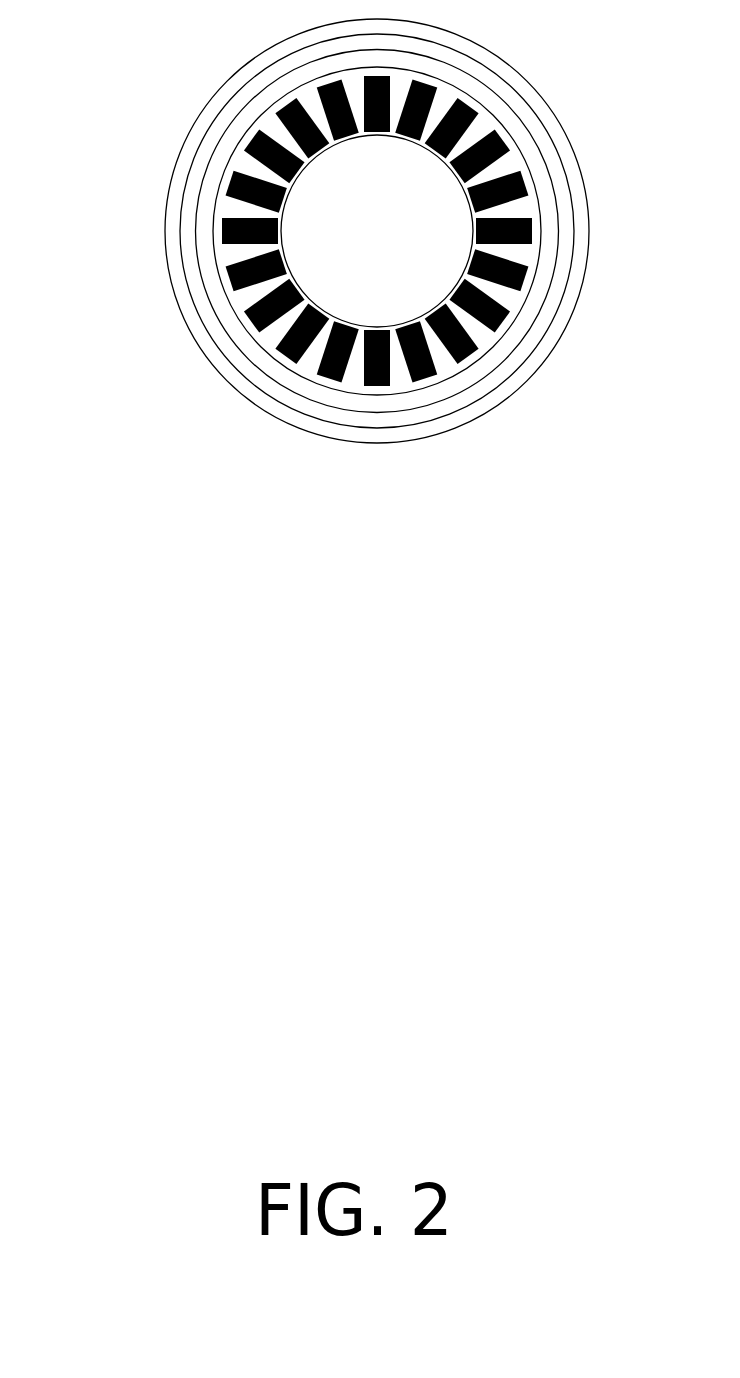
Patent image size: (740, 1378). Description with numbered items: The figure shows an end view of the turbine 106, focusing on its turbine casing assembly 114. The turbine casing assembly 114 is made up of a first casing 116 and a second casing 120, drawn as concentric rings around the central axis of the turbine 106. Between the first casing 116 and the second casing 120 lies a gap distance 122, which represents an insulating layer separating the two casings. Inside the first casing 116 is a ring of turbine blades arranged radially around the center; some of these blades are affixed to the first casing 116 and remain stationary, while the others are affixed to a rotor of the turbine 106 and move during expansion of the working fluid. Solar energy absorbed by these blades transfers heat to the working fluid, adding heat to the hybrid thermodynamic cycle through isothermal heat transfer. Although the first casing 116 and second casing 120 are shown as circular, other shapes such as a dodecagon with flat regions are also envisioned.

The turbine 106 is at (358, 242).
The turbine casing assembly 114 is at (147, 228).
The first casing 116 is at (532, 310).
The second casing 120 is at (568, 158).
The gap distance 122 is at (198, 163).